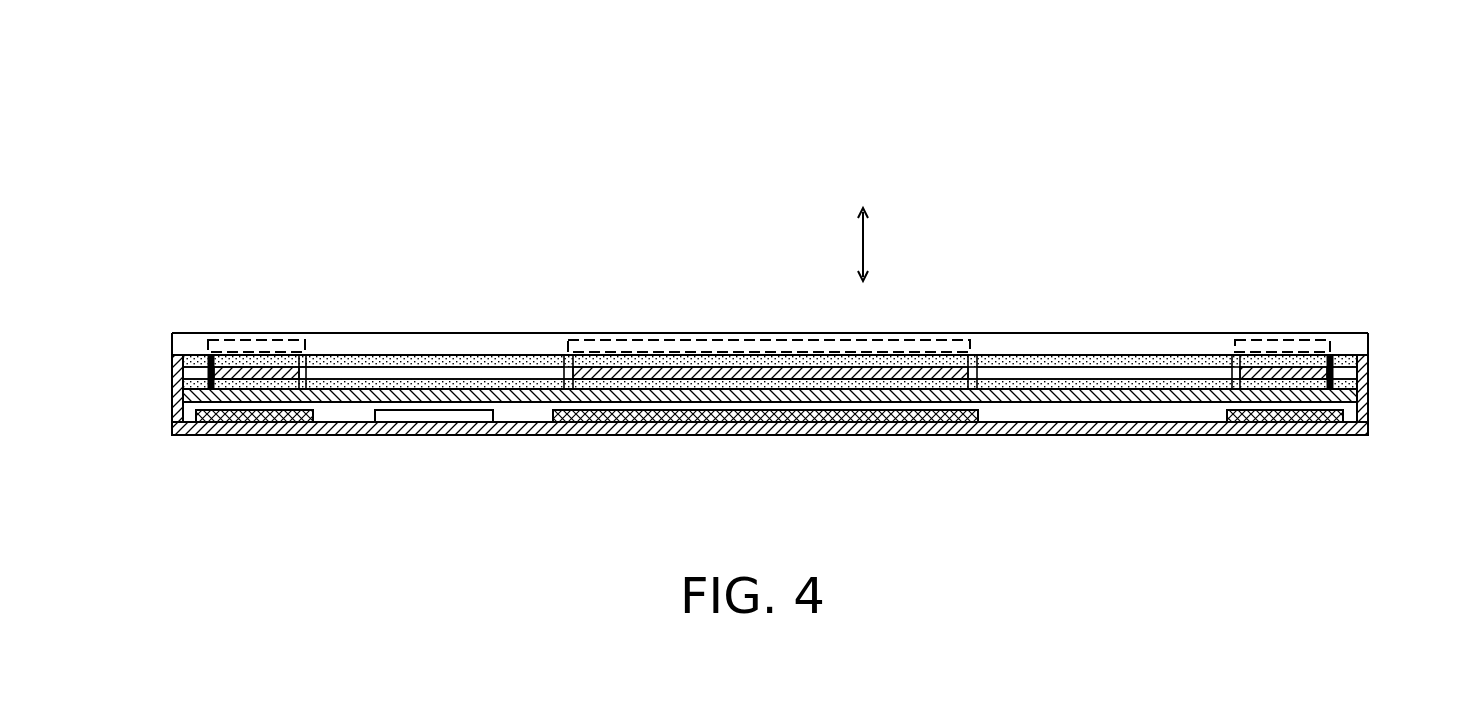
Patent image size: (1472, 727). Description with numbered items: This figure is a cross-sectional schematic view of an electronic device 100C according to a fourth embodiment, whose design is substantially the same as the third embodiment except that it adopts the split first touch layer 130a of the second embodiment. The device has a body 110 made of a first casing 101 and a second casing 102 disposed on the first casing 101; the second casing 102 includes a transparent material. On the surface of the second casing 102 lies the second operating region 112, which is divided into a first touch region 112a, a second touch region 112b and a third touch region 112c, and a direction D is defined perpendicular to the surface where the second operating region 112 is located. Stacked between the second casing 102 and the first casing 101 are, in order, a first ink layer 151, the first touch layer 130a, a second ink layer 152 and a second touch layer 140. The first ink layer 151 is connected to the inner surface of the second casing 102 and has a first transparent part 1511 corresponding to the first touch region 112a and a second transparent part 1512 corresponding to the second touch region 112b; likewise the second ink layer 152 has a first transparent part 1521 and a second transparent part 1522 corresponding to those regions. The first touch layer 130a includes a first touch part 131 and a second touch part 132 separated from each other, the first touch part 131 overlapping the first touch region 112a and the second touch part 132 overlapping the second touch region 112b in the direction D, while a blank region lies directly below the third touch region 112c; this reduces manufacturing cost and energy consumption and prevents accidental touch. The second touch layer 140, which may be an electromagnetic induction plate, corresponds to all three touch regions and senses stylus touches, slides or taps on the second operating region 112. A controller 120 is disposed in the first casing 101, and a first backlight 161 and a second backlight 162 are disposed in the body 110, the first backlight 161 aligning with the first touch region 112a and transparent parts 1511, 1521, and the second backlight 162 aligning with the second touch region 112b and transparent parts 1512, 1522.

The electronic device 100C is at (1339, 249).
The direction D is at (872, 244).
The body 110 is at (768, 369).
The second casing 102 is at (197, 343).
The first casing 101 is at (247, 433).
The second operating region 112 is at (1268, 62).
The first touch region 112a is at (773, 338).
The second touch region 112b is at (273, 338).
The third touch region 112c is at (477, 336).
The second touch layer 140 is at (172, 400).
The first ink layer 151 is at (172, 362).
The first transparent part 1511 is at (565, 357).
The second transparent part 1512 is at (206, 357).
The first touch layer 130a is at (770, 305).
The first touch part 131 is at (968, 373).
The second touch part 132 is at (295, 371).
The second ink layer 152 is at (172, 388).
The first transparent part 1521 is at (543, 403).
The second transparent part 1522 is at (206, 412).
The controller 120 is at (428, 421).
The first backlight 161 is at (768, 414).
The second backlight 162 is at (1283, 415).